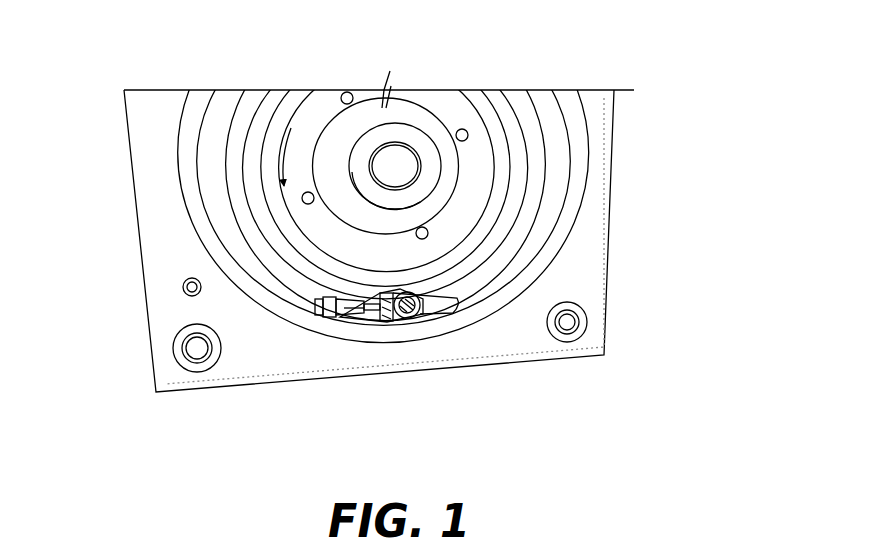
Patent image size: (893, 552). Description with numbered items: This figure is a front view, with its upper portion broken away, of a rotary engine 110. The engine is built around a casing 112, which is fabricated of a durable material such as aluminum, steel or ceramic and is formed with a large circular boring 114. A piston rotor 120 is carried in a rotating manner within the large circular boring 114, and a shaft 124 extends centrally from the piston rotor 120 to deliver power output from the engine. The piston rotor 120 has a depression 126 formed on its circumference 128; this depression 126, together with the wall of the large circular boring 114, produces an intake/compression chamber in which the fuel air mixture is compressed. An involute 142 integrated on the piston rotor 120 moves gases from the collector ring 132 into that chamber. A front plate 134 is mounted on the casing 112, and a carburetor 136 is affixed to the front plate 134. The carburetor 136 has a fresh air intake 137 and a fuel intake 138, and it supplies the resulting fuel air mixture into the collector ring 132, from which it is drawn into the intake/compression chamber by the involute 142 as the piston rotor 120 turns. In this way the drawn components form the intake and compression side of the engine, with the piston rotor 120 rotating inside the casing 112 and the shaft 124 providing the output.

The rotary engine 110 is at (656, 59).
The casing 112 is at (140, 228).
The large circular boring 114 is at (181, 147).
The piston rotor 120 is at (545, 203).
The shaft 124 is at (414, 176).
The depression 126 is at (247, 267).
The circumference 128 is at (415, 314).
The collector ring 132 is at (517, 110).
The front plate 134 is at (170, 322).
The carburetor 136 is at (342, 318).
The fresh air intake 137 is at (422, 316).
The fuel intake 138 is at (445, 310).
The involute 142 is at (371, 312).